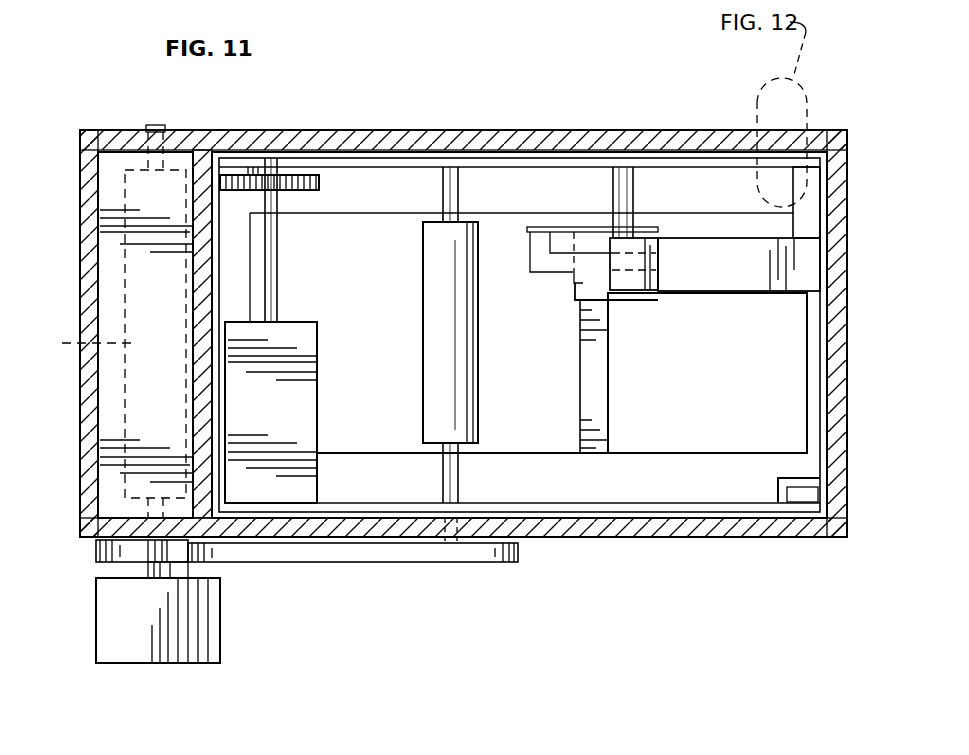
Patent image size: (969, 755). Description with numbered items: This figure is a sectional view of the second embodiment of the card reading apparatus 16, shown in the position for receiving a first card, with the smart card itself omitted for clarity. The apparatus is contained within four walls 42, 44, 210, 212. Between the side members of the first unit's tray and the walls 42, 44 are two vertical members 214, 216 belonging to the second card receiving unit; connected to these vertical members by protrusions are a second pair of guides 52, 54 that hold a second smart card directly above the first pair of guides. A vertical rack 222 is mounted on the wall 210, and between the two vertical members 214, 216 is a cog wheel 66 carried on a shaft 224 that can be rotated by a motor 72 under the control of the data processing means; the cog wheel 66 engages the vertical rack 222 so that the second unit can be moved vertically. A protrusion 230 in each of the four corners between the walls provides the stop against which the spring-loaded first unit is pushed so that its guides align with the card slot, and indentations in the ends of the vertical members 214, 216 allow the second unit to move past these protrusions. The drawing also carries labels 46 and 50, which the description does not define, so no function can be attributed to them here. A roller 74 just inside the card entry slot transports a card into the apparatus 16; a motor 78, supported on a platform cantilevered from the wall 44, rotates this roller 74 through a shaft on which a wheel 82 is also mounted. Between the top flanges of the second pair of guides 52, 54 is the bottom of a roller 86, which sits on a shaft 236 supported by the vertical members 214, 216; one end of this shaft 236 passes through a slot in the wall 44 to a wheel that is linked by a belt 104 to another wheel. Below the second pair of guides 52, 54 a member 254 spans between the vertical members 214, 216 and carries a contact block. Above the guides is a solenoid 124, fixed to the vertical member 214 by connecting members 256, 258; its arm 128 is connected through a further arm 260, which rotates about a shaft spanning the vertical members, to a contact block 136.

The card reading apparatus 16 is at (372, 622).
The wall 42 is at (487, 134).
The wall 44 is at (665, 528).
The reservoir 46 is at (228, 281).
The chamber 50 is at (808, 421).
The guide 52 is at (396, 228).
The guide 54 is at (399, 436).
The cog wheel 66 is at (320, 182).
The motor 72 is at (306, 338).
The roller 74 is at (83, 338).
The motor 78 is at (108, 622).
The wheel 82 is at (100, 552).
The roller 86 is at (479, 395).
The belt 104 is at (405, 553).
The solenoid 124 is at (738, 283).
The arm 128 is at (543, 258).
The contact block 136 is at (578, 283).
The wall 210 is at (208, 405).
The wall 212 is at (847, 390).
The vertical member 214 is at (521, 160).
The vertical member 216 is at (627, 502).
The vertical rack 222 is at (220, 179).
The shaft 224 is at (278, 296).
The protrusion 230 is at (810, 490).
The shaft 236 is at (459, 480).
The member 254 is at (600, 378).
The connecting member 256 is at (634, 193).
The connecting member 258 is at (808, 218).
The arm 260 is at (594, 226).